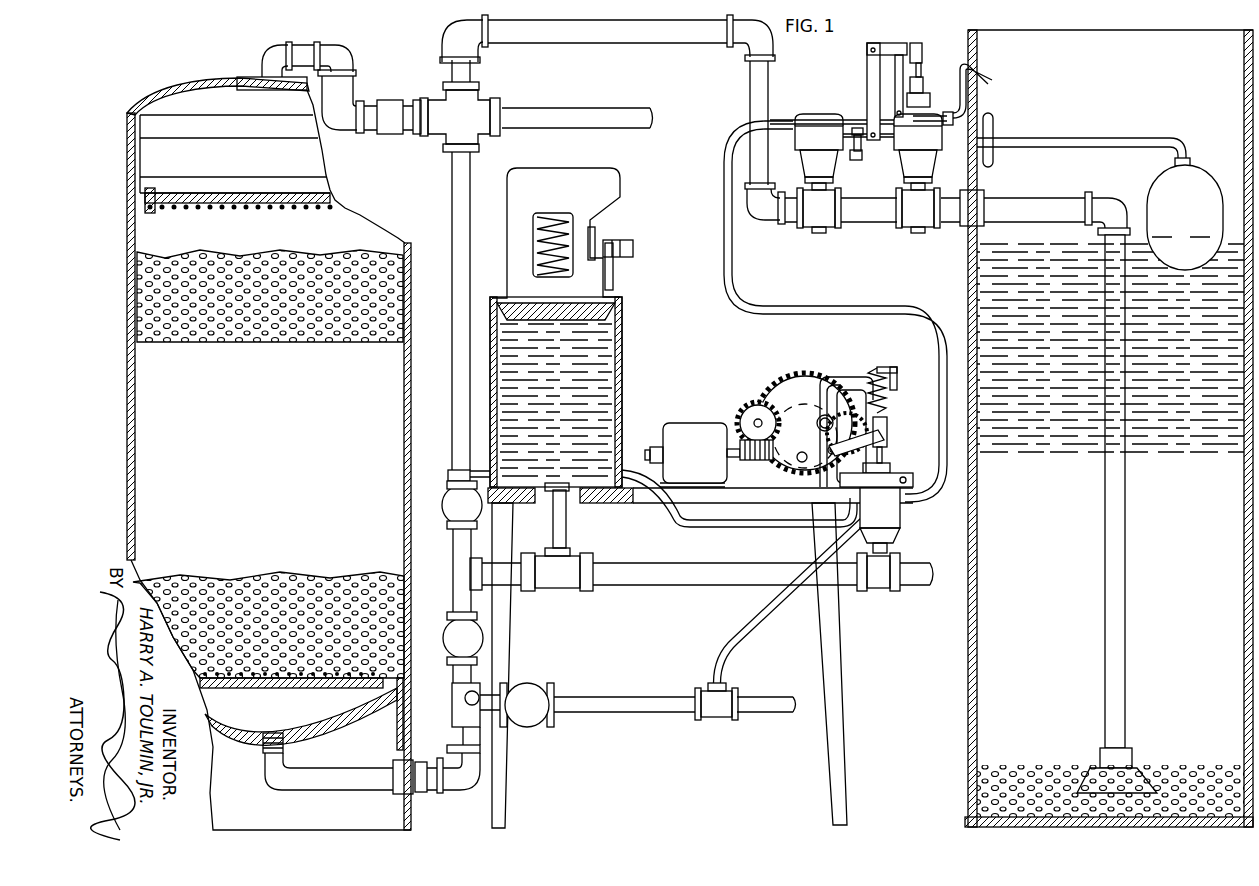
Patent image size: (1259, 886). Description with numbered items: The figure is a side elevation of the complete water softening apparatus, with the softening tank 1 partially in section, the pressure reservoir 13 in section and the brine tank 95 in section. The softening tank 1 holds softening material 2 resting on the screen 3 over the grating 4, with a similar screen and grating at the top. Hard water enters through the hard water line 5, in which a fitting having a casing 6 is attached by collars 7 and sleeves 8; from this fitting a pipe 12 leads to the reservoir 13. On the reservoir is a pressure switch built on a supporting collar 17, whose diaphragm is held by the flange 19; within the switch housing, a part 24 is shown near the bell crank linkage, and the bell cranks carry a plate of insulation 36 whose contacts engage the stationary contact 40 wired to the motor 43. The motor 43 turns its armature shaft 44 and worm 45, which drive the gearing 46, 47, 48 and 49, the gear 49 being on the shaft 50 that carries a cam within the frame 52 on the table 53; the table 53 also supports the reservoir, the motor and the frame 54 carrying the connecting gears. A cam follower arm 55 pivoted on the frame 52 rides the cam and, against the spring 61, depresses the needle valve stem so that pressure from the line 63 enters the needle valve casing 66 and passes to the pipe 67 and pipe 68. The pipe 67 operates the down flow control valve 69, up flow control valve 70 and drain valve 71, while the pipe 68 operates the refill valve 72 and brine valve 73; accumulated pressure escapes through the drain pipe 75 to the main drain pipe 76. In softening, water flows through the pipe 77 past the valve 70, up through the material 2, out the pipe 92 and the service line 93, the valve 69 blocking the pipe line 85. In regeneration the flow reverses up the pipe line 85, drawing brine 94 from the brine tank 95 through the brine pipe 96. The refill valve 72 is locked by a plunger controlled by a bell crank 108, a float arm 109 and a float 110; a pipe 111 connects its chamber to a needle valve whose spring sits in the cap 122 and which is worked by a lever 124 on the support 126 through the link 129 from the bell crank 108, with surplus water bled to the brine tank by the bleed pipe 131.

The softening tank 1 is at (404, 412).
The softening material 2 is at (408, 578).
The screen 3 is at (178, 208).
The grating 4 is at (204, 197).
The hard water line 5 is at (497, 560).
The casing 6 is at (555, 589).
The collars 7 is at (531, 590).
The sleeves 8 is at (530, 553).
The pipe 12 is at (566, 533).
The pressure reservoir 13 is at (622, 336).
The supporting collar 17 is at (615, 314).
The flange 19 is at (612, 300).
The spring 24 is at (535, 247).
The plate of insulation 36 is at (598, 235).
The stationary contact 40 is at (634, 248).
The motor 43 is at (707, 423).
The armature shaft 44 is at (733, 440).
The worm 45 is at (756, 461).
The gearing 46 is at (750, 405).
The gearing 47 is at (760, 412).
The gearing 48 is at (805, 375).
The gear 49 is at (848, 398).
The shaft 50 is at (833, 428).
The frame 52 is at (896, 369).
The table 53 is at (654, 503).
The frame 54 is at (738, 480).
The cam follower arm 55 is at (865, 445).
The spring 61 is at (888, 396).
The line 63 is at (895, 550).
The needle valve casing 66 is at (895, 477).
The pipe 67 is at (780, 522).
The pipe 68 is at (904, 308).
The down flow control valve 69 is at (445, 493).
The up flow control valve 70 is at (447, 633).
The drain valve 71 is at (527, 727).
The refill valve 72 is at (797, 166).
The brine valve 73 is at (934, 166).
The drain pipe 75 is at (730, 641).
The main drain pipe 76 is at (620, 697).
The pipe 77 is at (472, 598).
The pipe line 85 is at (452, 186).
The pipe 92 is at (350, 90).
The service line 93 is at (548, 108).
The brine 94 is at (975, 263).
The brine tank 95 is at (975, 283).
The brine pipe 96 is at (748, 88).
The bell crank 108 is at (862, 152).
The float arm 109 is at (1087, 138).
The float 110 is at (1153, 184).
The pipe 111 is at (850, 120).
The cap 122 is at (926, 84).
The lever 124 is at (885, 48).
The support 126 is at (922, 55).
The link 129 is at (866, 66).
The bleed pipe 131 is at (985, 73).